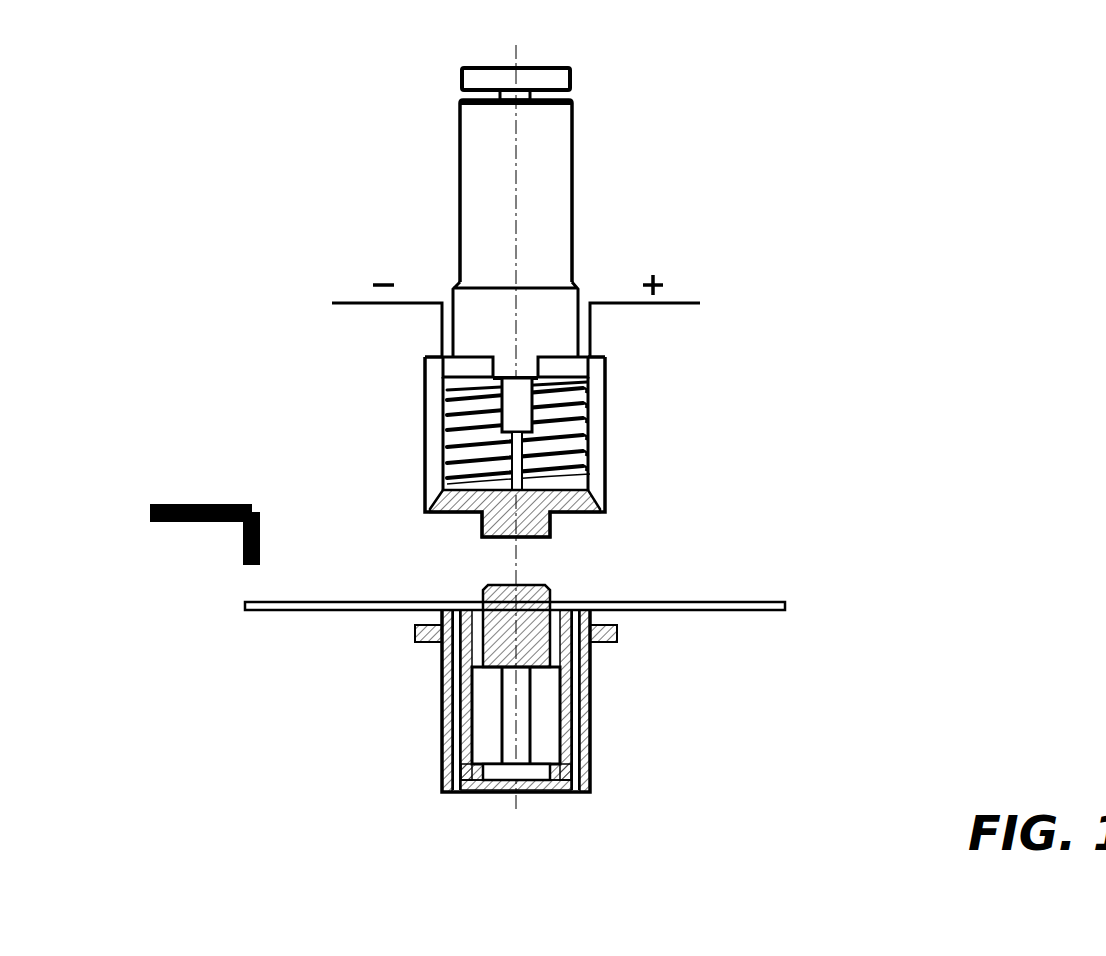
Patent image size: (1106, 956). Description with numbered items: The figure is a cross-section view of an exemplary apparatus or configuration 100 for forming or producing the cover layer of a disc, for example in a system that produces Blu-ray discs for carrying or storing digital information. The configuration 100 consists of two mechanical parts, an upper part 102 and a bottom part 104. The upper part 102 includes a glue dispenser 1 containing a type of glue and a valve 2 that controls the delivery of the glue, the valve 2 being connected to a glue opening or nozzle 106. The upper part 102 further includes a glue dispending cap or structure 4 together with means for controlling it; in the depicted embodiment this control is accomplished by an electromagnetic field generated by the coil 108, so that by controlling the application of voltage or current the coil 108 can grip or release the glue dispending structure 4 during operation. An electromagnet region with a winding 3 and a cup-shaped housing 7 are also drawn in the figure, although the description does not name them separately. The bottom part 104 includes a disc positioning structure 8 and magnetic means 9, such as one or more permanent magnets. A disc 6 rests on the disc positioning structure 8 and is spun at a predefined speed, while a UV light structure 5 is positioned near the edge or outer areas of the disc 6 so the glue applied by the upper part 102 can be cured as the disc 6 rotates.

The glue dispenser 1 is at (458, 166).
The valve 2 is at (552, 308).
The electromagnet coil 3 is at (452, 401).
The glue dispending structure 4 is at (552, 518).
The UV light structure 5 is at (193, 498).
The disc 6 is at (263, 598).
The cup housing 7 is at (435, 677).
The disc positioning structure 8 is at (500, 650).
The magnetic means 9 is at (612, 641).
The configuration 100 is at (698, 413).
The upper part 102 is at (912, 133).
The bottom part 104 is at (915, 585).
The glue opening or nozzle 106 is at (590, 474).
The coil 108 is at (578, 386).